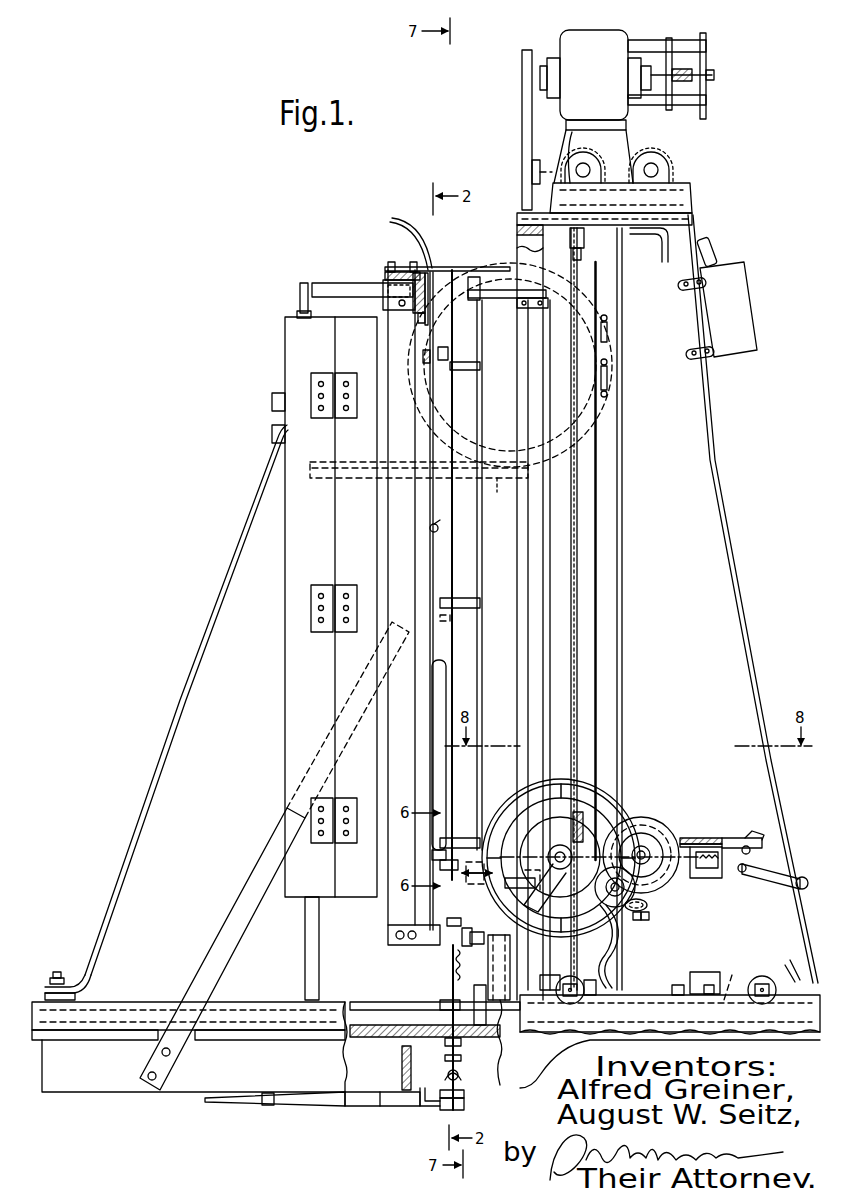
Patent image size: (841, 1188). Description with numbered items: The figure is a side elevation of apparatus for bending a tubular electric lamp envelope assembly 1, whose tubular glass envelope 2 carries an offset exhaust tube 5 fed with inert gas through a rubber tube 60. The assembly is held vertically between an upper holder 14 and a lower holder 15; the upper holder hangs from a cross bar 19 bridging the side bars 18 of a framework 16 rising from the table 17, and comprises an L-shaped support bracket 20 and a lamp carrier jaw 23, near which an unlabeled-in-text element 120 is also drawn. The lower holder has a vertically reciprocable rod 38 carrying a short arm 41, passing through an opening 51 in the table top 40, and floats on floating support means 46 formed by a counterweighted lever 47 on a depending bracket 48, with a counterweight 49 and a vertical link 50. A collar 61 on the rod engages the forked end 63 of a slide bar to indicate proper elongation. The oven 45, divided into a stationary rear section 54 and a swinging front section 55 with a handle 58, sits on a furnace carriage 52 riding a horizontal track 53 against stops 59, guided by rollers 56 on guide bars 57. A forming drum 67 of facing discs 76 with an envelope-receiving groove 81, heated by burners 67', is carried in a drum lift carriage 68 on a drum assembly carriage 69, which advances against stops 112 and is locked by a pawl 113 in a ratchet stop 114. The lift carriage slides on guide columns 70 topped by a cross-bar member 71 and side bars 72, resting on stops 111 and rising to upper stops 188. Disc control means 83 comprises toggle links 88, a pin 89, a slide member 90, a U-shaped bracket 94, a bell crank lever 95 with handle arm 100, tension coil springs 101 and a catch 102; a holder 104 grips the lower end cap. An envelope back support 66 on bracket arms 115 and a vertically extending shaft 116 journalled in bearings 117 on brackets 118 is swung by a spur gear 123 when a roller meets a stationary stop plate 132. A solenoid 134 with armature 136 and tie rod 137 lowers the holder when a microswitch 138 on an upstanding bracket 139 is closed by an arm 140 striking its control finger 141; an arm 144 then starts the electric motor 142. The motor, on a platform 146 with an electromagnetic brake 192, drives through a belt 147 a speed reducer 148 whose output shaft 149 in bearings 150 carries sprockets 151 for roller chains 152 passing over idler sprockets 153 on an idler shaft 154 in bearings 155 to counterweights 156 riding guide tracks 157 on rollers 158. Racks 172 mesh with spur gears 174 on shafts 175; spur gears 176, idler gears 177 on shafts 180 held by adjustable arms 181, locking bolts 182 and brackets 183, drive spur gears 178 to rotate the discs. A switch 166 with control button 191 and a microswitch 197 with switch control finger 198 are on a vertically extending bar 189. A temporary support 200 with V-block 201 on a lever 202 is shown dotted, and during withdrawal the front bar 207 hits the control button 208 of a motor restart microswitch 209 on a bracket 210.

The tubular electric lamp envelope assembly 1 is at (430, 690).
The tubular glass envelope 2 is at (440, 526).
The exhaust tube 5 is at (428, 292).
The upper holder 14 is at (420, 318).
The lower holder 15 is at (440, 868).
The framework 16 is at (383, 305).
The table 17 is at (176, 1088).
The side bars 18 is at (377, 437).
The cross bar 19 is at (385, 276).
The L-shaped support bracket 20 is at (386, 273).
The lamp carrier jaw 23 is at (425, 360).
The vertically reciprocable rod 38 is at (448, 920).
The table top 40 is at (370, 1025).
The short arm 41 is at (432, 857).
The oven 45 is at (285, 690).
The floating support means 46 is at (318, 1108).
The counterweighted lever 47 is at (348, 1108).
The depending bracket 48 is at (380, 1108).
The counterweight 49 is at (268, 1106).
The vertical link 50 is at (464, 1110).
The opening 51 is at (461, 1043).
The furnace carriage 52 is at (158, 1002).
The horizontal track 53 is at (354, 1002).
The stationary rear section 54 is at (285, 547).
The swinging front section 55 is at (413, 538).
The rollers 56 is at (300, 300).
The guide bars 57 is at (322, 290).
The handle 58 is at (342, 818).
The stops 59 is at (440, 1004).
The rubber tube 60 is at (410, 236).
The collar 61 is at (466, 928).
The forked end 63 is at (452, 972).
The envelope back support 66 is at (455, 635).
The forming drum 67 is at (561, 846).
The burners 67' is at (568, 981).
The drum lift carriage 68 is at (700, 880).
The drum assembly carriage 69 is at (650, 992).
The guide columns 70 is at (545, 705).
The cross-bar member 71 is at (517, 222).
The side bars 72 is at (517, 250).
The facing discs 76 is at (495, 805).
The annular envelope-receiving groove 81 is at (503, 840).
The disc control means 83 is at (728, 836).
The toggle links 88 is at (690, 838).
The pin 89 is at (706, 838).
The slide member 90 is at (750, 851).
The U-shaped bracket 94 is at (706, 870).
The bell crank lever 95 is at (755, 870).
The arm 100 is at (803, 878).
The tension coil springs 101 is at (724, 862).
The catch 102 is at (750, 835).
The holder 104 is at (468, 876).
The stops 111 is at (478, 948).
The stops 112 is at (486, 992).
The pawl 113 is at (795, 964).
The ratchet stop 114 is at (732, 988).
The bracket arms 115 is at (480, 367).
The vertically extending shaft 116 is at (482, 672).
The bearings 117 is at (470, 290).
The brackets 118 is at (488, 300).
The block 120 is at (445, 355).
The spur gear 123 is at (470, 950).
The stationary stop plate 132 is at (420, 944).
The solenoid 134 is at (464, 1095).
The armature 136 is at (458, 1078).
The tie rod 137 is at (425, 1100).
The microswitch 138 is at (520, 889).
The upstanding bracket 139 is at (508, 950).
The arm 140 is at (560, 866).
The control finger 141 is at (585, 895).
The electric motor 142 is at (562, 42).
The arm 144 is at (461, 1060).
The platform 146 is at (640, 232).
The belt 147 is at (522, 116).
The speed reducer 148 is at (566, 150).
The output shaft 149 is at (583, 178).
The bearings 150 is at (565, 176).
The sprockets 151 is at (605, 162).
The roller chains 152 is at (577, 530).
The idler sprockets 153 is at (632, 168).
The idler shaft 154 is at (668, 170).
The bearings 155 is at (672, 180).
The counterweights 156 is at (742, 292).
The guide tracks 157 is at (720, 490).
The rollers 158 is at (685, 290).
The switch 166 is at (606, 316).
The racks 172 is at (598, 604).
The spur gears 174 is at (665, 826).
The shafts 175 is at (642, 850).
The spur gears 176 is at (637, 870).
The idler gears 177 is at (606, 838).
The spur gears 178 is at (576, 812).
The shafts 180 is at (612, 935).
The adjustable arms 181 is at (637, 920).
The locking bolts 182 is at (647, 918).
The brackets 183 is at (648, 904).
The upper stops 188 is at (545, 308).
The vertically extending bar 189 is at (622, 462).
The control button 191 is at (607, 340).
The electromagnetic brake 192 is at (712, 72).
The microswitch 197 is at (606, 396).
The switch control finger 198 is at (607, 365).
The temporary support 200 is at (497, 494).
The V-block 201 is at (503, 440).
The lever 202 is at (497, 470).
The front bar 207 is at (535, 1040).
The control button 208 is at (676, 986).
The motor restart microswitch 209 is at (712, 985).
The bracket 210 is at (704, 972).